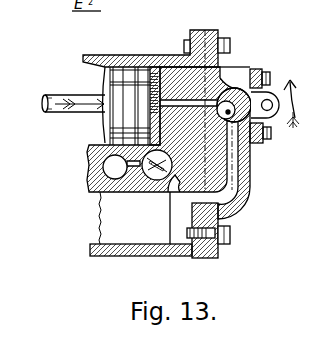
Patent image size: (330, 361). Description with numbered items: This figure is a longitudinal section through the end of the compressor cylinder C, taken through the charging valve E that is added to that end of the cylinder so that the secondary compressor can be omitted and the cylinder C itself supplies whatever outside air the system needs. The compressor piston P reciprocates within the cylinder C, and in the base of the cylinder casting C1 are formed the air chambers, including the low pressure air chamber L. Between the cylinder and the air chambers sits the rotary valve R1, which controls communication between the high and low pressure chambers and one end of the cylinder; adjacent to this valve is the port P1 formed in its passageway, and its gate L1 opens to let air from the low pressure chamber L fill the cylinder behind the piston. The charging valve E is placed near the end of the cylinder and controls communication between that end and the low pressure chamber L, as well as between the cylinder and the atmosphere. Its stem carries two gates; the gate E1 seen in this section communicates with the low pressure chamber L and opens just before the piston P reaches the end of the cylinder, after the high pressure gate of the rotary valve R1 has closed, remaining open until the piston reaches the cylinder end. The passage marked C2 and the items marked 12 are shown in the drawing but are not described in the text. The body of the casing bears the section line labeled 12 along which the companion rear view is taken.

The compressor cylinder C is at (107, 66).
The cylinder casting C1 is at (206, 243).
The casing channel C2 is at (241, 161).
The compressor piston P is at (132, 106).
The port P1 is at (112, 167).
The rotary valve R1 is at (155, 170).
The low pressure air chamber L is at (134, 218).
The gate L1 is at (103, 136).
The charging valve E is at (246, 82).
The gate E1 is at (254, 142).
The bolt 12 is at (232, 67).